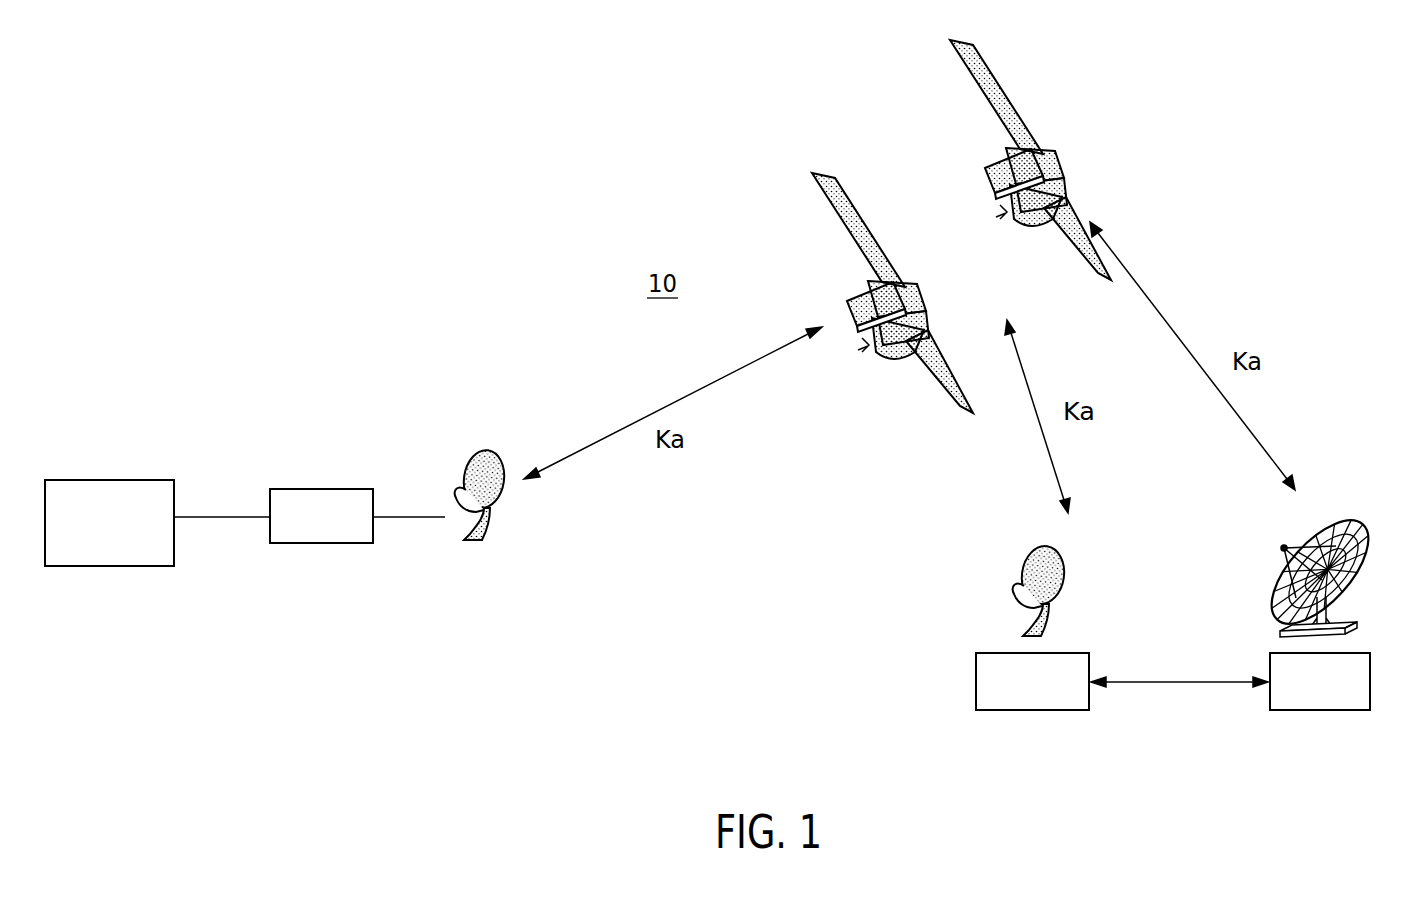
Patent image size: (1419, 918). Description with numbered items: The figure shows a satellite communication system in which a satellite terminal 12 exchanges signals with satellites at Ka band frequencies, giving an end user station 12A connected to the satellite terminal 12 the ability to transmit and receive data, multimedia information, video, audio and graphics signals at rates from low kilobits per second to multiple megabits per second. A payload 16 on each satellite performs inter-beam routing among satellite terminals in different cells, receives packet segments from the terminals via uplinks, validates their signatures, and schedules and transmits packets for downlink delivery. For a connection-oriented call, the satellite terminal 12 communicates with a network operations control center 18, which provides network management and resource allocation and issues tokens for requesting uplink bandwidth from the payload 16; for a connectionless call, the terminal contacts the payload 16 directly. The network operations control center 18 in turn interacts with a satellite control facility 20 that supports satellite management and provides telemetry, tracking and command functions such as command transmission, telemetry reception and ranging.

The satellite terminal 12 is at (328, 488).
The end user station 12A is at (113, 478).
The payload 16 is at (852, 307).
The network operations control center 18 is at (1070, 637).
The satellite control facility 20 is at (1340, 615).